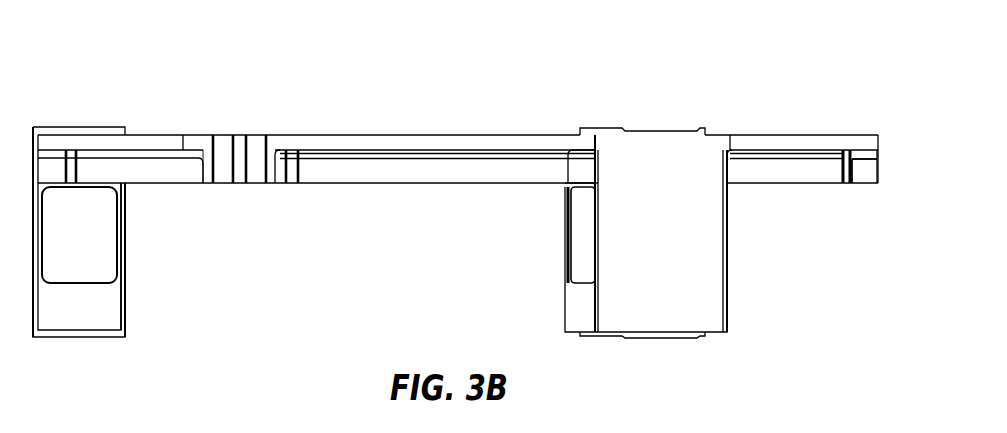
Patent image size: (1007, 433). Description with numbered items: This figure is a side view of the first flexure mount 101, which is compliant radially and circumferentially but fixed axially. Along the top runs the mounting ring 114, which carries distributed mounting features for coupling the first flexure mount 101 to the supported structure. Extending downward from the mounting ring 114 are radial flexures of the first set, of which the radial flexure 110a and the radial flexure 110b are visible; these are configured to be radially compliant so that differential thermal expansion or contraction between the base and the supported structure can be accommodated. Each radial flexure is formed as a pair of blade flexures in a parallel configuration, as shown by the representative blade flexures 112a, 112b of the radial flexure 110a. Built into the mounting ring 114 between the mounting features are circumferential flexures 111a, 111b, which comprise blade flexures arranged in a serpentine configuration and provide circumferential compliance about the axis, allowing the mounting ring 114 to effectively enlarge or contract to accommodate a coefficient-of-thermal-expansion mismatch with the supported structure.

The first flexure mount 101 is at (291, 36).
The mounting ring 114 is at (422, 134).
The radial flexure 110a is at (132, 232).
The radial flexure 110b is at (553, 233).
The circumferential flexure 111a is at (245, 200).
The circumferential flexure 111b is at (864, 201).
The blade flexure 112a is at (38, 235).
The blade flexure 112b is at (121, 238).